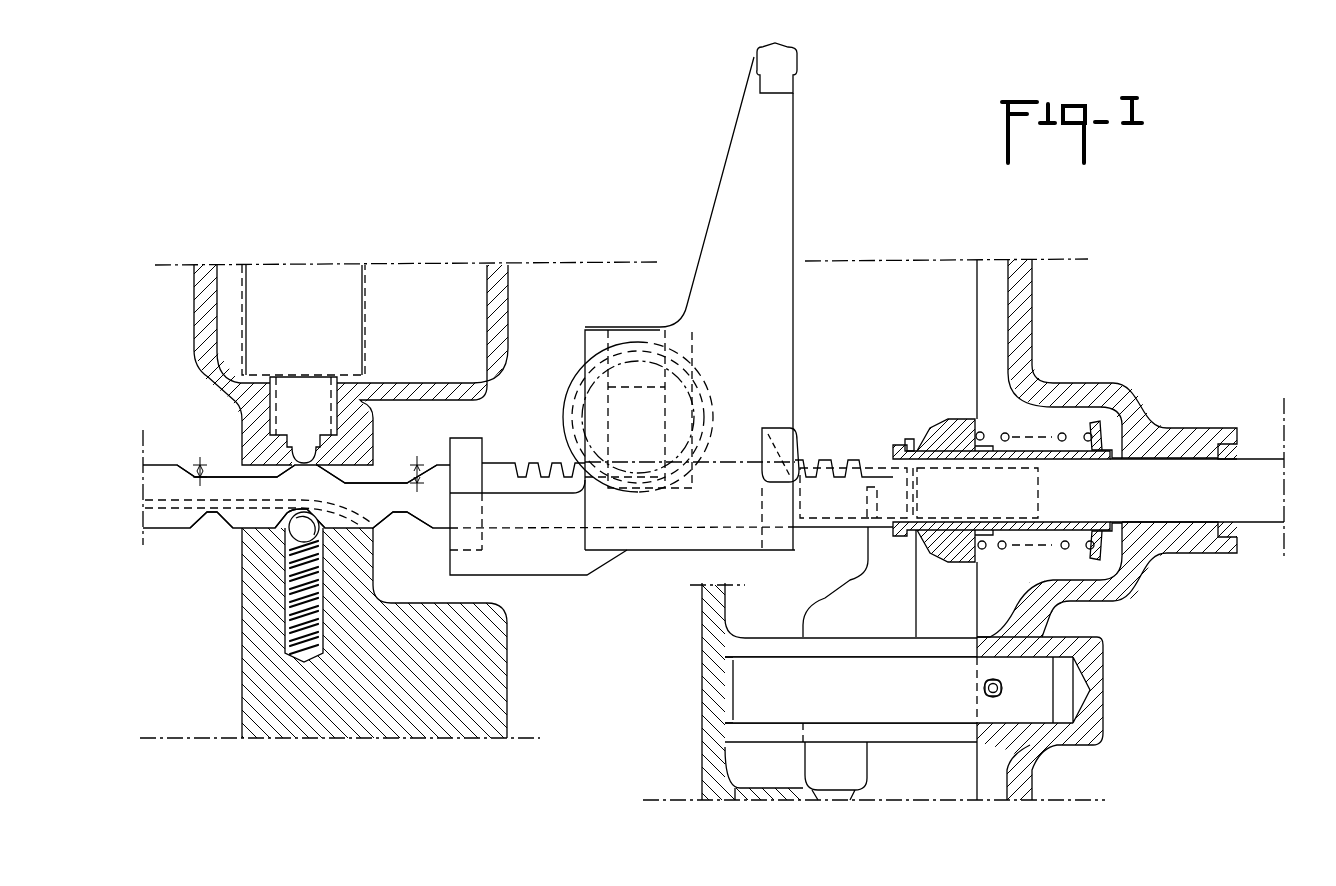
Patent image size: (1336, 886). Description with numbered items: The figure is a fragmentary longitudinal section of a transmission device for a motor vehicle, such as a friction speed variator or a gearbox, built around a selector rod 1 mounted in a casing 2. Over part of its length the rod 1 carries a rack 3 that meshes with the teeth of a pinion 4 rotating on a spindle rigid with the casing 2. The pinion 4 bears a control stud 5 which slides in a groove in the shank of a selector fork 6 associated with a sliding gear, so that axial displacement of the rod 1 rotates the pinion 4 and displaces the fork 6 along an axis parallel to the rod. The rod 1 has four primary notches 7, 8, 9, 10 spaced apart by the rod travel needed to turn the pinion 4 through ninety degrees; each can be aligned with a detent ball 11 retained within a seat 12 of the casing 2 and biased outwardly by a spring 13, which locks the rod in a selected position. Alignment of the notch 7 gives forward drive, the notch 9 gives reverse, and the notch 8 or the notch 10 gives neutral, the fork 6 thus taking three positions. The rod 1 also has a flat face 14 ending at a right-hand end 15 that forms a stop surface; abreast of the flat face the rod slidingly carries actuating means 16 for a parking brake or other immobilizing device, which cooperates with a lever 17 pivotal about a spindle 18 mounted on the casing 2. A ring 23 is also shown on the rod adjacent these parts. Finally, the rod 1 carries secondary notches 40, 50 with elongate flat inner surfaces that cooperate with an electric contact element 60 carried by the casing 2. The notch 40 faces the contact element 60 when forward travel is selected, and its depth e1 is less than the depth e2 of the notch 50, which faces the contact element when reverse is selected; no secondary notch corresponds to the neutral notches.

The selector rod 1 is at (1250, 460).
The casing 2 is at (207, 322).
The rack 3 is at (516, 466).
The pinion 4 is at (690, 392).
The control stud 5 is at (655, 327).
The selector fork 6 is at (776, 136).
The primary notch 7 is at (212, 530).
The primary notch 8 is at (290, 532).
The primary notch 9 is at (400, 525).
The primary notch 10 is at (500, 518).
The detent ball 11 is at (323, 535).
The seat 12 is at (290, 626).
The spring 13 is at (318, 606).
The flat face 14 is at (1020, 496).
The right-hand end 15 is at (1045, 509).
The actuating means 16 is at (948, 410).
The lever 17 is at (892, 598).
The spindle 18 is at (873, 704).
The ring 23 is at (908, 438).
The secondary notch 40 is at (224, 456).
The secondary notch 50 is at (392, 471).
The electric contact element 60 is at (306, 440).
The depth of notch 40 e1 is at (190, 463).
The depth of notch 50 e2 is at (428, 465).